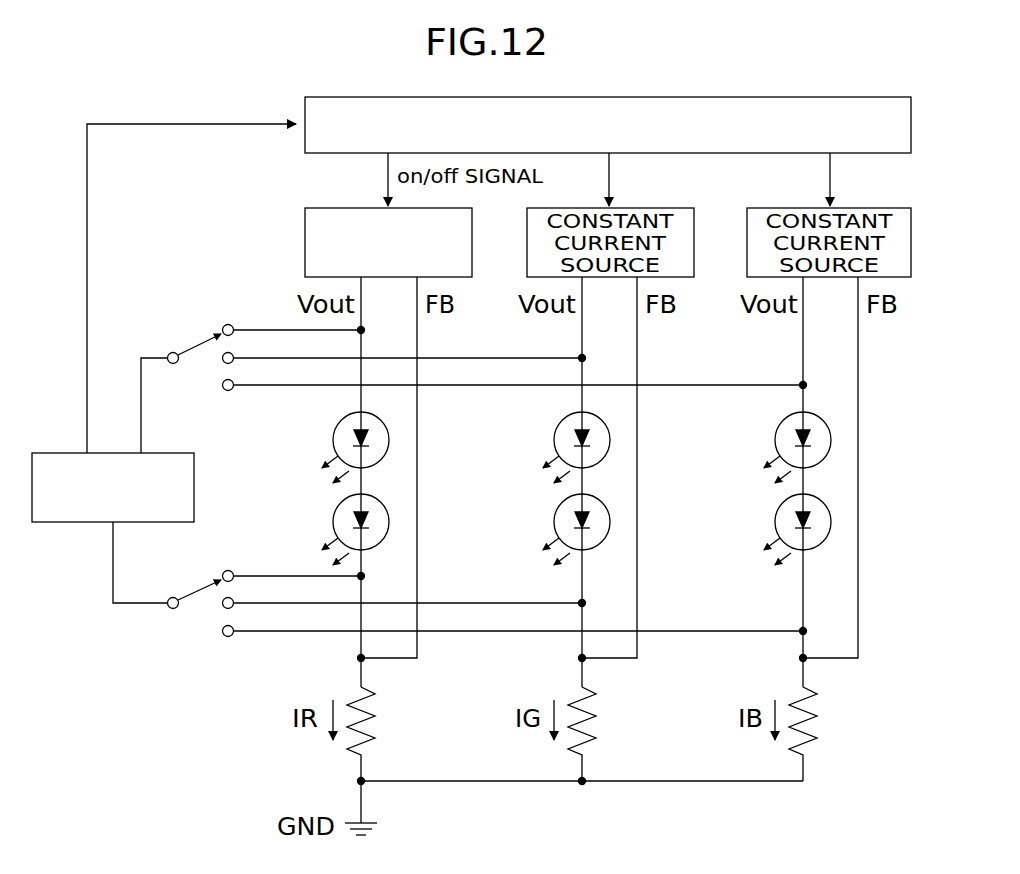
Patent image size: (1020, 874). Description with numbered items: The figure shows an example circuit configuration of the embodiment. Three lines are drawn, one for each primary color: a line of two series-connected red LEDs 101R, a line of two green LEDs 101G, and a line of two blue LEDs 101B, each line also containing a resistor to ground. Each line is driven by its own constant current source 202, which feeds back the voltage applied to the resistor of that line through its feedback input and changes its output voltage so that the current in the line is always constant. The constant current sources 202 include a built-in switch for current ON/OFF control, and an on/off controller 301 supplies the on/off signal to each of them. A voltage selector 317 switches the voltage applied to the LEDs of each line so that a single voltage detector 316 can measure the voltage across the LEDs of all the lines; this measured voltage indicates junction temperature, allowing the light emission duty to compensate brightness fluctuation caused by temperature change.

The on/off controller 301 is at (712, 97).
The constant current source 202 is at (305, 241).
The voltage selector 317 is at (196, 341).
The voltage detector 316 is at (196, 489).
The red LEDs 101R is at (334, 435).
The green LEDs 101G is at (555, 435).
The blue LEDs 101B is at (775, 435).